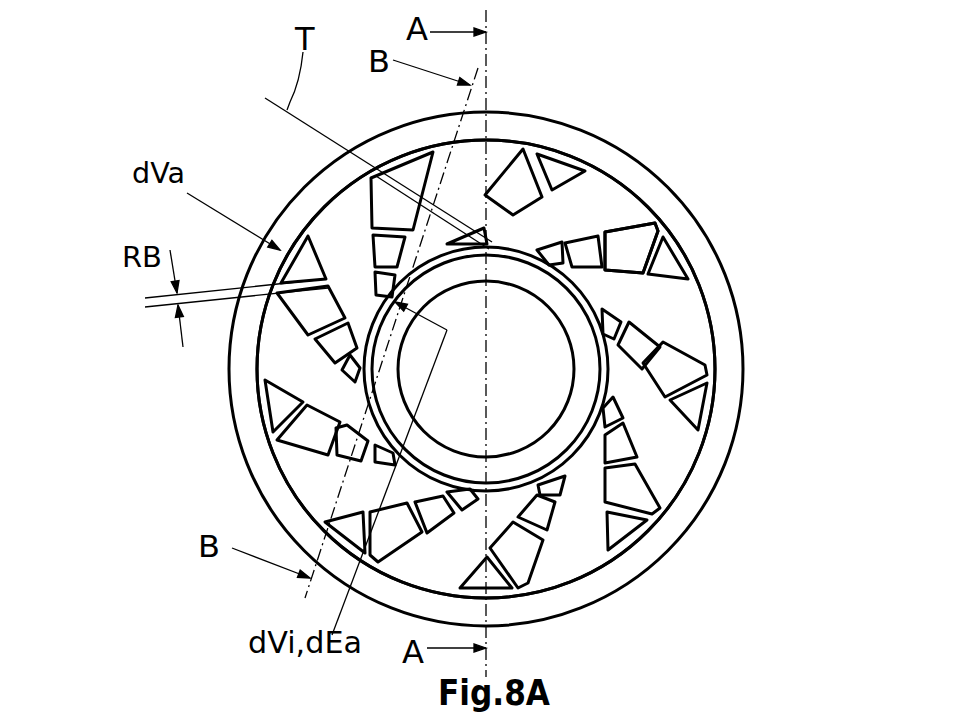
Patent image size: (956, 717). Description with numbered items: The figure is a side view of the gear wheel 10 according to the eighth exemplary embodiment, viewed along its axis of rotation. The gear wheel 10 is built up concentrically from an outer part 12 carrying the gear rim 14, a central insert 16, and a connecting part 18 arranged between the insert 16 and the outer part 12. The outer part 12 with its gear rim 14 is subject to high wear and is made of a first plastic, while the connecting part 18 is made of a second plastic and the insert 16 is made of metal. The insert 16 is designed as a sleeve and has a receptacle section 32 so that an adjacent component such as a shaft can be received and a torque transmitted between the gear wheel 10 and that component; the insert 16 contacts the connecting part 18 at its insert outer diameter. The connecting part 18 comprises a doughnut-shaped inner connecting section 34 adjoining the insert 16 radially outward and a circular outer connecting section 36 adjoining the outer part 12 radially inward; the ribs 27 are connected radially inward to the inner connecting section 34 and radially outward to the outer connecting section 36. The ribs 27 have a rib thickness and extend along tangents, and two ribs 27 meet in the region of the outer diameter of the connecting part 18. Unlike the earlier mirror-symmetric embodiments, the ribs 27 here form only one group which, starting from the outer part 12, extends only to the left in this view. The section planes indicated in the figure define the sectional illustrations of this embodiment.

The gear wheel 10 is at (132, 100).
The outer part 12 is at (650, 180).
The gear rim 14 is at (486, 343).
The insert 16 is at (585, 362).
The connecting part 18 is at (660, 337).
The ribs 27 is at (729, 262).
The receptacle section 32 is at (567, 397).
The inner connecting section 34 is at (607, 393).
The outer connecting section 36 is at (712, 410).